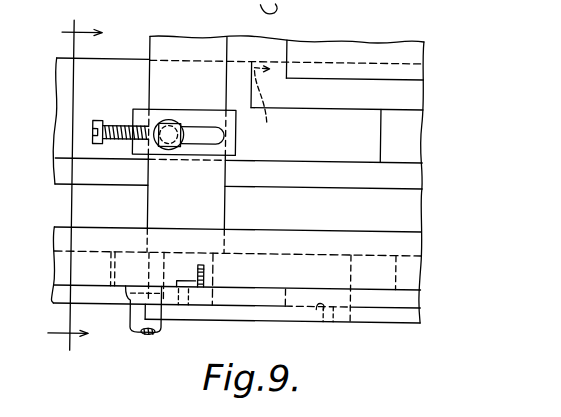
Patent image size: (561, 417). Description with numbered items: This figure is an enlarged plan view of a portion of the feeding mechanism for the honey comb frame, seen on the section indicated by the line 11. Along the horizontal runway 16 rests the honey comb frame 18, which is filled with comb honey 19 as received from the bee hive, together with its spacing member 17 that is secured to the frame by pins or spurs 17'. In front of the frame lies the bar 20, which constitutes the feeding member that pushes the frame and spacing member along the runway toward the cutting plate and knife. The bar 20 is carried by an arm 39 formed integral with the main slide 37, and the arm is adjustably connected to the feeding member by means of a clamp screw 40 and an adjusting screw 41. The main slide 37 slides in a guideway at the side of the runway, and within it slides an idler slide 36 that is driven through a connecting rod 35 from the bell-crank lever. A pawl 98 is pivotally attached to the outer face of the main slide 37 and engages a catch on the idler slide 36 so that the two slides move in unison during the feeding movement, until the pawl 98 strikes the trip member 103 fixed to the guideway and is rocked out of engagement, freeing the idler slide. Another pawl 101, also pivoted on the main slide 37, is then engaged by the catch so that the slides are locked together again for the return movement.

The section line 11 is at (74, 189).
The horizontal runway 16 is at (66, 105).
The spacing member 17 is at (316, 140).
The pin or spur 17' is at (276, 105).
The honey comb frame 18 is at (410, 86).
The comb honey 19 is at (388, 47).
The bar 20 is at (162, 47).
The connecting rod 35 is at (146, 322).
The idler slide 36 is at (125, 280).
The main slide 37 is at (80, 265).
The arm 39 is at (160, 203).
The clamp screw 40 is at (168, 126).
The adjusting screw 41 is at (92, 136).
The pawl 98 is at (208, 296).
The pawl 101 is at (325, 305).
The trip member 103 is at (185, 312).